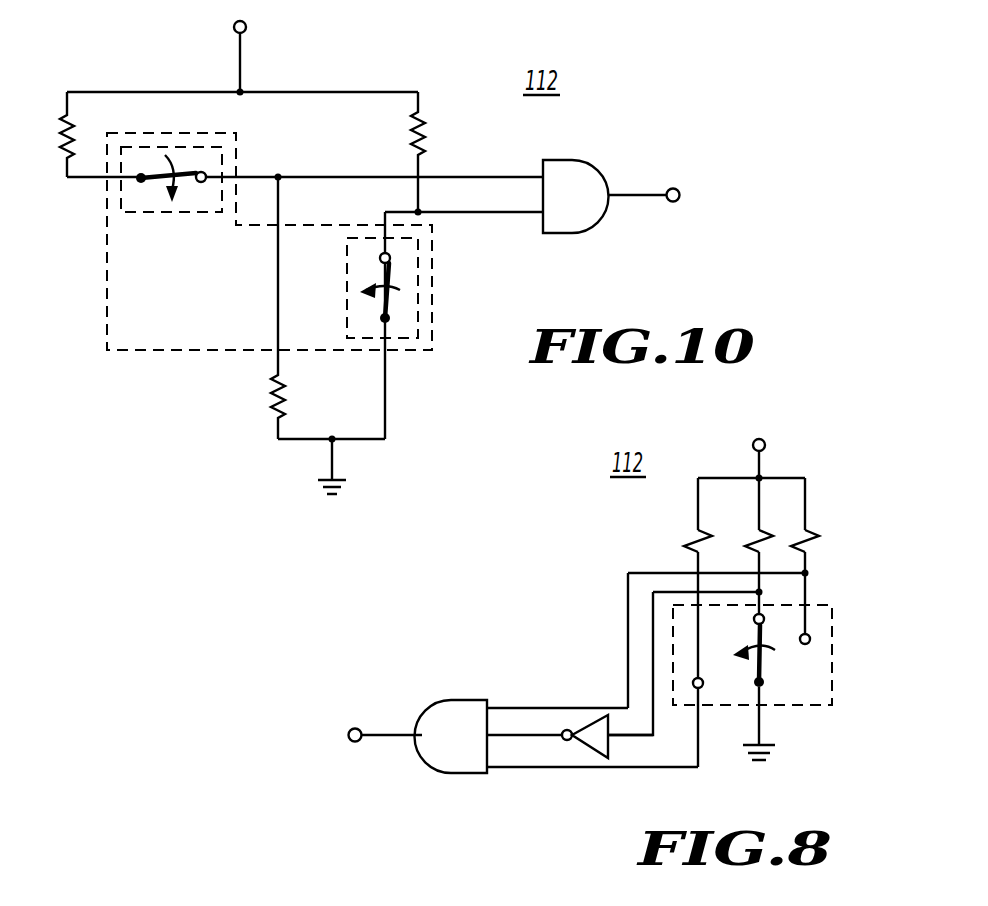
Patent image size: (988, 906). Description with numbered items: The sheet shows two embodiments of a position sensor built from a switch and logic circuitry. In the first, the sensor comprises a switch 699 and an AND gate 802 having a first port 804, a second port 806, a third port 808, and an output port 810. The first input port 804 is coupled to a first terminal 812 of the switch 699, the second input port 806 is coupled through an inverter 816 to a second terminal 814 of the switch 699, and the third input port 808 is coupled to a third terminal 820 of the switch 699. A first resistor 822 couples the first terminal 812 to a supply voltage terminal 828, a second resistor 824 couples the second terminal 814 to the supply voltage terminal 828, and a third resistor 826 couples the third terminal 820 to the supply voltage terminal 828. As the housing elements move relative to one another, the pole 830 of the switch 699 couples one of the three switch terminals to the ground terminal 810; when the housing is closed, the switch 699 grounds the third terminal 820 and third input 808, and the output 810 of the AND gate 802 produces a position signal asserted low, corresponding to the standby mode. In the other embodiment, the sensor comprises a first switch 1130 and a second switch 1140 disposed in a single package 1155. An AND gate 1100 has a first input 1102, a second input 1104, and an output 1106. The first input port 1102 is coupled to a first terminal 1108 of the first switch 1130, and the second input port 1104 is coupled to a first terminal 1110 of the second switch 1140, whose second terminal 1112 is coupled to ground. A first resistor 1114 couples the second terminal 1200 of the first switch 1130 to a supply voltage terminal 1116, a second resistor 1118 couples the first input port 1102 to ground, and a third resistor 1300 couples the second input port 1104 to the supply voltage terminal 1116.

In FIG. 10, the AND gate 1100 is at (600, 226).
In FIG. 10, the first input port 1102 is at (540, 176).
In FIG. 10, the second input port 1104 is at (540, 214).
In FIG. 10, the output 1106 is at (676, 188).
In FIG. 10, the first terminal of the first switch 1108 is at (203, 183).
In FIG. 10, the first terminal of the second switch 1110 is at (380, 258).
In FIG. 10, the second terminal of the second switch 1112 is at (390, 318).
In FIG. 10, the first resistor 1114 is at (62, 135).
In FIG. 10, the supply voltage terminal 1116 is at (247, 27).
In FIG. 10, the second resistor 1118 is at (275, 397).
In FIG. 10, the first switch 1130 is at (200, 147).
In FIG. 10, the second switch 1140 is at (420, 260).
In FIG. 10, the single package 1155 is at (108, 350).
In FIG. 10, the second terminal of the first switch 1200 is at (146, 172).
In FIG. 10, the third resistor 1300 is at (412, 125).
In FIG. 8, the switch 699 is at (812, 606).
In FIG. 8, the AND gate 802 is at (440, 773).
In FIG. 8, the first input port 804 is at (489, 701).
In FIG. 8, the second input port 806 is at (489, 737).
In FIG. 8, the third input port 808 is at (489, 770).
In FIG. 8, the output port 810 is at (775, 750).
In FIG. 8, the first terminal 812 is at (812, 639).
In FIG. 8, the second terminal 814 is at (755, 624).
In FIG. 8, the inverter 816 is at (592, 755).
In FIG. 8, the third terminal 820 is at (703, 688).
In FIG. 8, the first resistor 822 is at (815, 535).
In FIG. 8, the second resistor 824 is at (752, 542).
In FIG. 8, the third resistor 826 is at (690, 535).
In FIG. 8, the supply voltage terminal 828 is at (765, 450).
In FIG. 8, the pole 830 is at (763, 680).